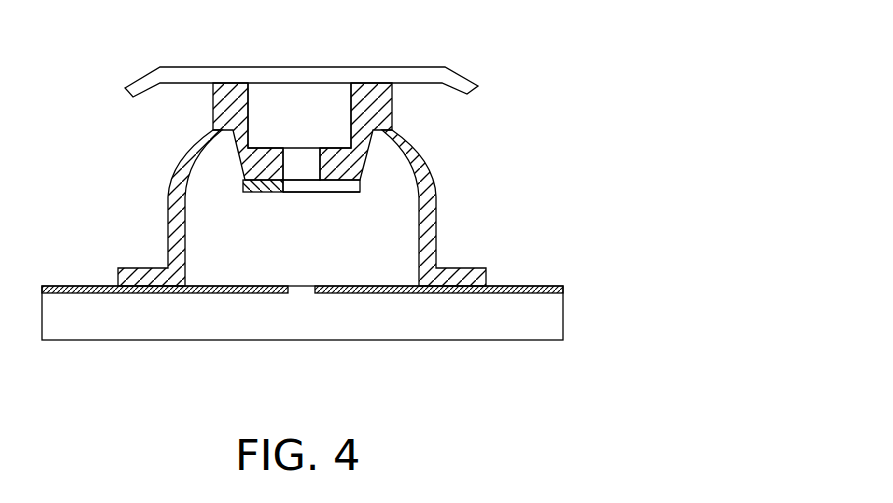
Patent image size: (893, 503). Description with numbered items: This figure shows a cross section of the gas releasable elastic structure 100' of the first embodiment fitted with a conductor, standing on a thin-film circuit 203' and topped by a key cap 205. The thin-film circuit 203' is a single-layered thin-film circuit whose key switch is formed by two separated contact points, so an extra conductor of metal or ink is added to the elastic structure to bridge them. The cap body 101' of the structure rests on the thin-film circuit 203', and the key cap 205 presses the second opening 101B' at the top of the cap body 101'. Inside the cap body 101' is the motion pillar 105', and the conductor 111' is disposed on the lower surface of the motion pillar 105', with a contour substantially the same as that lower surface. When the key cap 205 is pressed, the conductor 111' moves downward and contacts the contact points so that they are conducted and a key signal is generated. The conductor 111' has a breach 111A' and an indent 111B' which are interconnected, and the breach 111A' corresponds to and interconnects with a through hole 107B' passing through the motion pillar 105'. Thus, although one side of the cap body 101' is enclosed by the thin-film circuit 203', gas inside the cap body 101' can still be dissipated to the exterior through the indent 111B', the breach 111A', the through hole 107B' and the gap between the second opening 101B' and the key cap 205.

The gas releasable elastic structure 100' is at (335, 205).
The cap body 101' is at (322, 208).
The second opening 101B' is at (320, 84).
The motion pillar 105' is at (217, 131).
The slot / opening 107B' is at (276, 100).
The conductor 111' is at (180, 189).
The breach 111A' is at (296, 290).
The indent 111B' is at (390, 151).
The thin-film circuit 203' is at (357, 306).
The key cap 205 is at (448, 72).